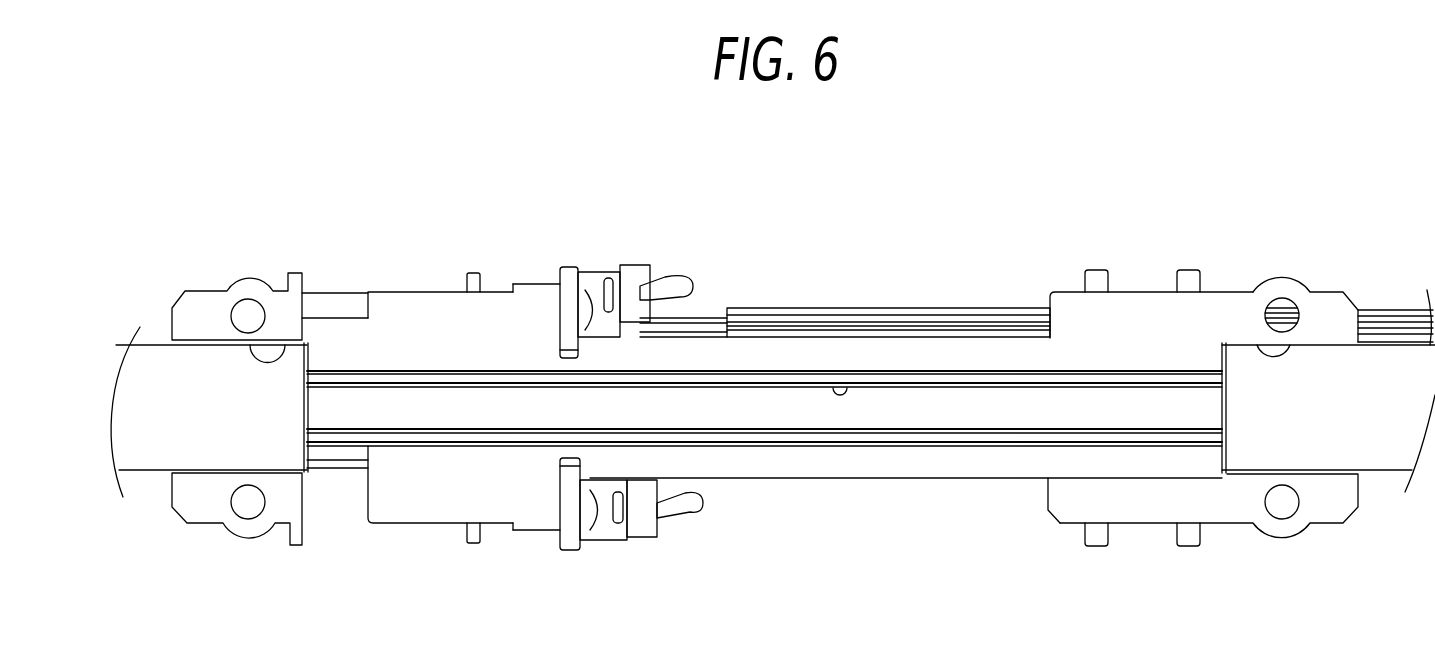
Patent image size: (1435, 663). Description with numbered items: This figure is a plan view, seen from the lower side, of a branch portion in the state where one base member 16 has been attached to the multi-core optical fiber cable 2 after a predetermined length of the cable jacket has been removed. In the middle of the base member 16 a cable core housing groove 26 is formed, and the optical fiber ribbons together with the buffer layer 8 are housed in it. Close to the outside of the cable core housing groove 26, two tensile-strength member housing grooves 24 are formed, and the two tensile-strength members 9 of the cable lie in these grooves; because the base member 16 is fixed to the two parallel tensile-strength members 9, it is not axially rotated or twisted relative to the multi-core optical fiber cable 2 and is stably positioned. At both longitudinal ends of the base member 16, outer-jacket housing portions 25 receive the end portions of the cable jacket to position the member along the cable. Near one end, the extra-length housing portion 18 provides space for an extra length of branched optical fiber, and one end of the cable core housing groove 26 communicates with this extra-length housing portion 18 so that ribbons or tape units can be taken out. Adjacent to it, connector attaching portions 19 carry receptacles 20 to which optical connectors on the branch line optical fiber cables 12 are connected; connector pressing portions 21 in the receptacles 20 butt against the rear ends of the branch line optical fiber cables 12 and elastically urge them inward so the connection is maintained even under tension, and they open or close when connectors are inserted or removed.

The multi-core optical fiber cable 2 is at (186, 387).
The outer-jacket housing portion 25 is at (287, 348).
The tensile-strength member 9 is at (404, 378).
The tensile-strength member housing groove 24 is at (474, 382).
The buffer layer 8 is at (757, 408).
The cable core housing groove 26 is at (840, 388).
The extra-length housing portion 18 is at (335, 487).
The connector attaching portion 19 is at (570, 268).
The receptacle 20 is at (598, 285).
The connector pressing portion 21 is at (683, 285).
The branch line optical fiber cable 12 is at (795, 318).
The base member 16 is at (912, 490).